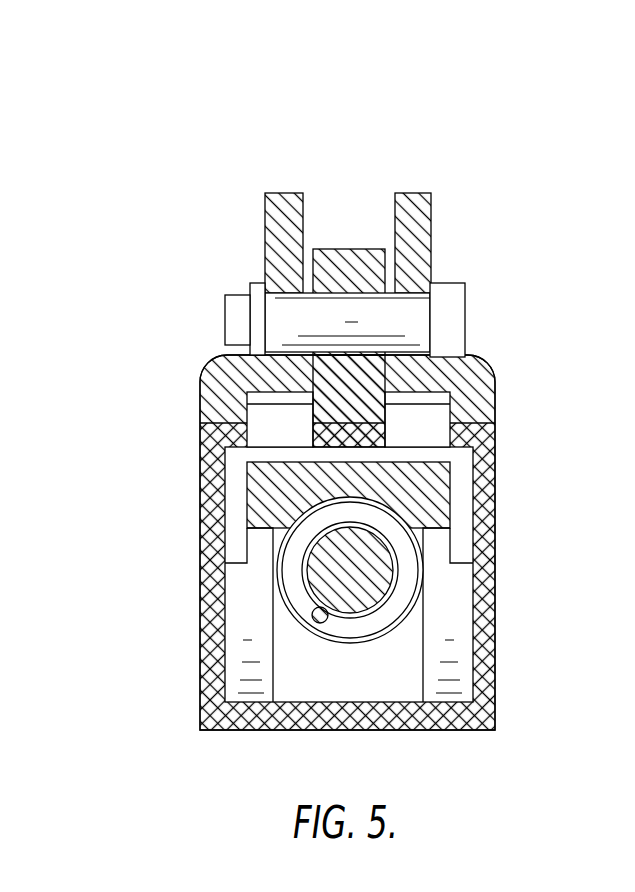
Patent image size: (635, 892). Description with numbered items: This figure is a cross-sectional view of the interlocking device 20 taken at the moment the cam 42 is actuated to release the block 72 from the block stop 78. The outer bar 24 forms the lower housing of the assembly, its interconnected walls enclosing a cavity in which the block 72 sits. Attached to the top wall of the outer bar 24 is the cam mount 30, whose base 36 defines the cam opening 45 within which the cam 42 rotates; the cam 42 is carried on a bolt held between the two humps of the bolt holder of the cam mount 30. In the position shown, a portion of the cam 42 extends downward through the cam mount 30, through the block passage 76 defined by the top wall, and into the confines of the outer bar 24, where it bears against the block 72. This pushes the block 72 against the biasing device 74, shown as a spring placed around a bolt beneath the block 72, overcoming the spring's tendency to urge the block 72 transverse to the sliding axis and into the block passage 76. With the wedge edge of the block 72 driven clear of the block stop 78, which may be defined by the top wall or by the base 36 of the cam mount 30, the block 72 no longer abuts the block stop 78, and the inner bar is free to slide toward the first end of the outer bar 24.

The interlocking device 20 is at (445, 158).
The outer bar 24 is at (428, 652).
The cam mount 30 is at (198, 397).
The base 36 is at (432, 317).
The cam 42 is at (378, 249).
The cam opening 45 is at (300, 372).
The block 72 is at (417, 502).
The biasing device 74 is at (397, 570).
The block passage 76 is at (435, 435).
The block stop 78 is at (290, 424).